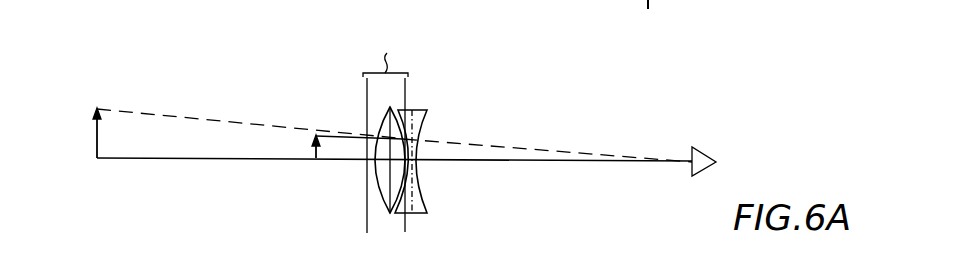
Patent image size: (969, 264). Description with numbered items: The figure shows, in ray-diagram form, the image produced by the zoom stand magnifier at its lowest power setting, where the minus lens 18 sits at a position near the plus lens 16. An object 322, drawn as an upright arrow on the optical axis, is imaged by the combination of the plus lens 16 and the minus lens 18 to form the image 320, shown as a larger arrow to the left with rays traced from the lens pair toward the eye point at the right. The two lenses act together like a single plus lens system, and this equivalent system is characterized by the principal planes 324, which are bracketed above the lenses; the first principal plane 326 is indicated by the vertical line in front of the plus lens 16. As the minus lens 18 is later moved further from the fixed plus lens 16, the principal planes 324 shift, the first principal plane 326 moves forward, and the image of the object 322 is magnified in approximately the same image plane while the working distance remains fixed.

The plus lens 16 is at (377, 122).
The minus lens 18 is at (428, 201).
The image 320 is at (95, 135).
The object 322 is at (310, 160).
The principal planes 324 is at (387, 130).
The first principal plane 326 is at (366, 204).